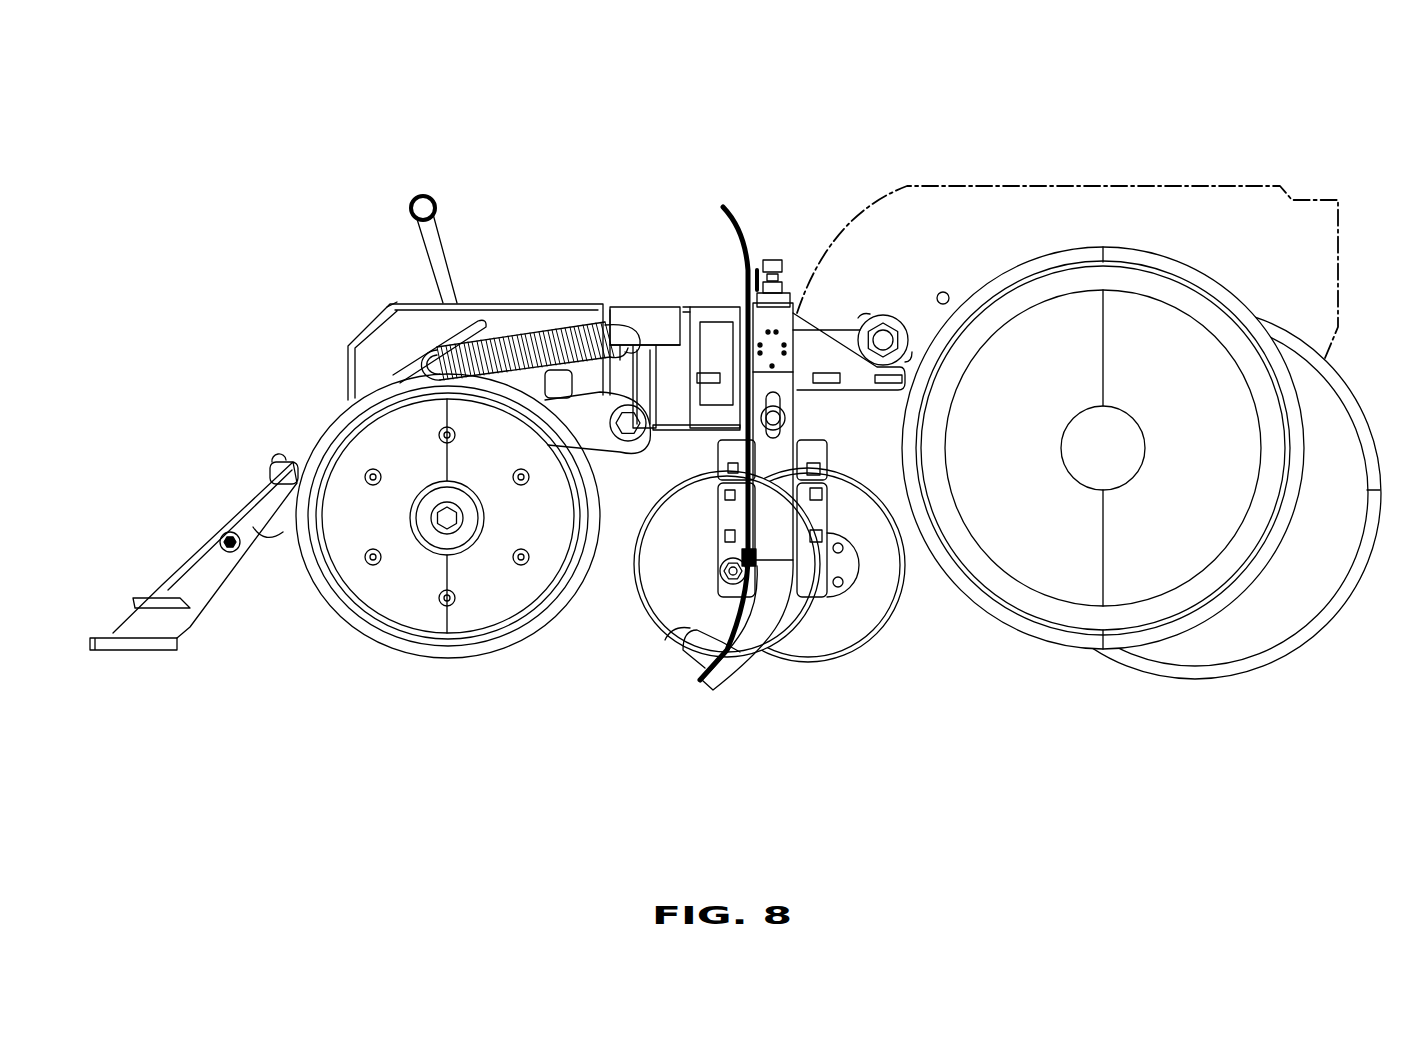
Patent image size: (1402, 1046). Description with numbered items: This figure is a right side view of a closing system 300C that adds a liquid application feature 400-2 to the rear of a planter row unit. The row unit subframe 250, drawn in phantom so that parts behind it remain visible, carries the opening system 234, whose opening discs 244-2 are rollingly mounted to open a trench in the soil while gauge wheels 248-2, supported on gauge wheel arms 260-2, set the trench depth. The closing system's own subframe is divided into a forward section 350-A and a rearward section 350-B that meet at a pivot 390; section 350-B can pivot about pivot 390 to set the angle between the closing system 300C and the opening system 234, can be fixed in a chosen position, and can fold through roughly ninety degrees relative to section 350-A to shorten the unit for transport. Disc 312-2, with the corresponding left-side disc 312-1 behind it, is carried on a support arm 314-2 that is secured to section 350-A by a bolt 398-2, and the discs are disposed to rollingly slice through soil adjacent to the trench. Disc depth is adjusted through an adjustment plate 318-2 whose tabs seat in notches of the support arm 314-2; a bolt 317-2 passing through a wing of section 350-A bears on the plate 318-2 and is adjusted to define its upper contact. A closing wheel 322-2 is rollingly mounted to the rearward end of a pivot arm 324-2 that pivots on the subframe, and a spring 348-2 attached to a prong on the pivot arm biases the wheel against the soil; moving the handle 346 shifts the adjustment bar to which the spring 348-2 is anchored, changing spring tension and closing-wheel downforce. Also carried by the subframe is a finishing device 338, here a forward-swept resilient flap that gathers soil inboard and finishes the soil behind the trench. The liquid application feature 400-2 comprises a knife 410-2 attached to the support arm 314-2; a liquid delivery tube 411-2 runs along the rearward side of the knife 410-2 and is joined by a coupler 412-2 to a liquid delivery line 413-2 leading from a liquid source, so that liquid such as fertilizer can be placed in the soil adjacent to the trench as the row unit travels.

The closing system 300C is at (313, 165).
The handle 346 is at (420, 198).
The spring 348-2 is at (535, 350).
The subframe section 350-B is at (635, 307).
The subframe section 350-A is at (878, 312).
The pivot 390 is at (700, 280).
The pivot arm 324-2 is at (598, 437).
The closing wheel 322-2 is at (385, 598).
The finishing device 338 is at (195, 568).
The liquid delivery line 413-2 is at (723, 207).
The bolt 317-2 is at (773, 267).
The support arm 314-2 is at (783, 437).
The bolt 398-2 is at (785, 415).
The adjustment plate 318-2 is at (822, 350).
The gauge wheel arm 260-2 is at (918, 330).
The row unit subframe 250 is at (1170, 194).
The gauge wheel 248-2 is at (1053, 552).
The opening disc 244-2 is at (1300, 595).
The opening system 234 is at (1183, 733).
The disc 312-2 is at (662, 573).
The disc 312-1 is at (853, 623).
The knife 410-2 is at (745, 658).
The liquid delivery tube 411-2 is at (697, 632).
The coupler 412-2 is at (675, 642).
The liquid application feature 400-2 is at (713, 699).